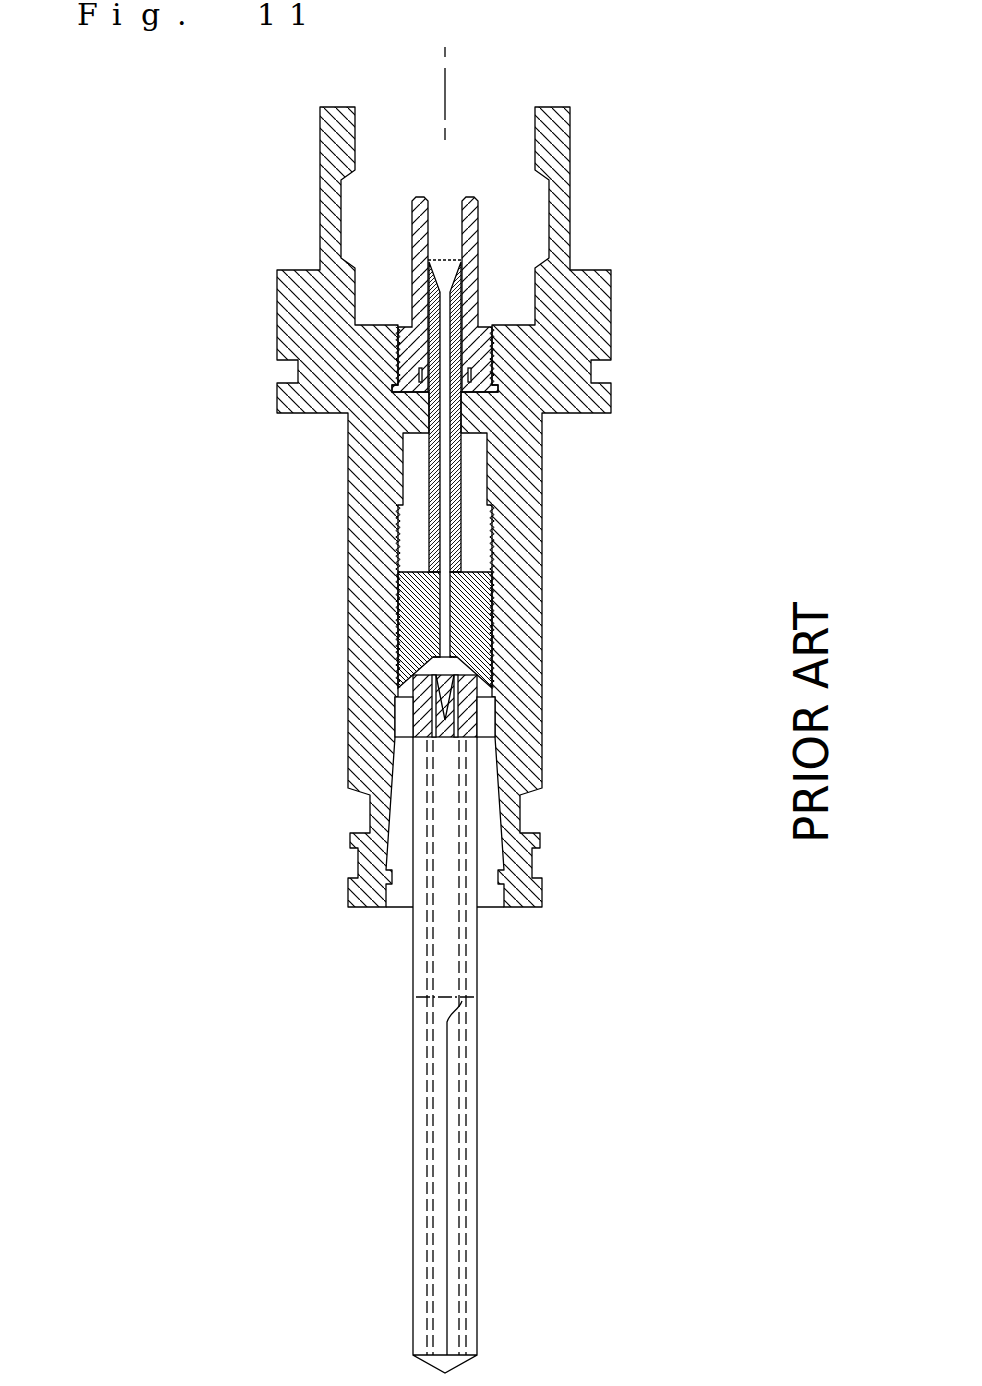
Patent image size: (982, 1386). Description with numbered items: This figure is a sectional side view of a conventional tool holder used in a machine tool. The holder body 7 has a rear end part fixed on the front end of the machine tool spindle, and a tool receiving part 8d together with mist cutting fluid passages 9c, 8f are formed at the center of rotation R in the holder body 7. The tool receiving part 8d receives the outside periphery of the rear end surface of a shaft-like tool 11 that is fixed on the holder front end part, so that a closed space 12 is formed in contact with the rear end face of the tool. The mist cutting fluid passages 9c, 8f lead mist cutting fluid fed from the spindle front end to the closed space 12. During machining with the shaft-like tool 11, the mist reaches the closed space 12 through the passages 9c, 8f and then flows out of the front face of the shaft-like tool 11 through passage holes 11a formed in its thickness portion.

The holder body 7 is at (356, 550).
The mist cutting fluid passage 9c is at (443, 210).
The mist cutting fluid passage 8f is at (450, 473).
The closed space 12 is at (455, 663).
The tool receiving part 8d is at (467, 698).
The shaft-like tool 11 is at (417, 1093).
The passage hole 11a is at (432, 1233).
The center of rotation R is at (455, 82).